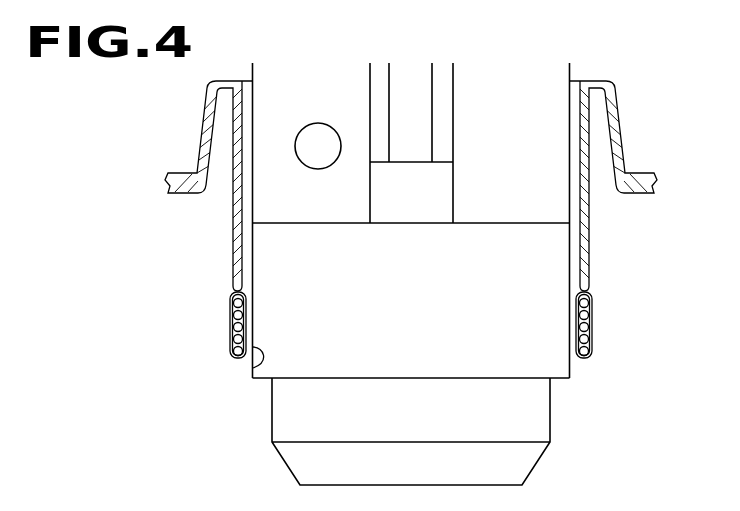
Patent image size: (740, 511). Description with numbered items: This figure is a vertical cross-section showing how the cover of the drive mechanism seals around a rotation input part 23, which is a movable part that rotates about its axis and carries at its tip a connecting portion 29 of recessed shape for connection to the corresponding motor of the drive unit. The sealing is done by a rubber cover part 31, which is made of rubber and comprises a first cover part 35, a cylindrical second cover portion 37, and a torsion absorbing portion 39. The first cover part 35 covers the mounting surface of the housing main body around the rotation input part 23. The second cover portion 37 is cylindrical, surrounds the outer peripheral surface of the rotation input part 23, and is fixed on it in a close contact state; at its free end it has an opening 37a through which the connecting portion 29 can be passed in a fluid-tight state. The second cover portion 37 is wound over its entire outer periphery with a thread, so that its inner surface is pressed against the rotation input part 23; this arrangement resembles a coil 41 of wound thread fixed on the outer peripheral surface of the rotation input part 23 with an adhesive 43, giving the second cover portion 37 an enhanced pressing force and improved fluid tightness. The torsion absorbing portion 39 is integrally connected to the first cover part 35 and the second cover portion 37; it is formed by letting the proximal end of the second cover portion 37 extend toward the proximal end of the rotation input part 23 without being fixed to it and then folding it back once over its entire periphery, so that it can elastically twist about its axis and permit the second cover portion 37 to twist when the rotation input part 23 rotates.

The rotation input part 23 is at (578, 400).
The connecting portion 29 is at (542, 458).
The rubber cover part 31 is at (146, 219).
The first cover part 35 is at (171, 194).
The second cover portion 37 is at (170, 325).
The opening 37a is at (253, 368).
The torsion absorbing portion 39 is at (212, 204).
The coil 41 is at (593, 302).
The adhesive 43 is at (593, 335).